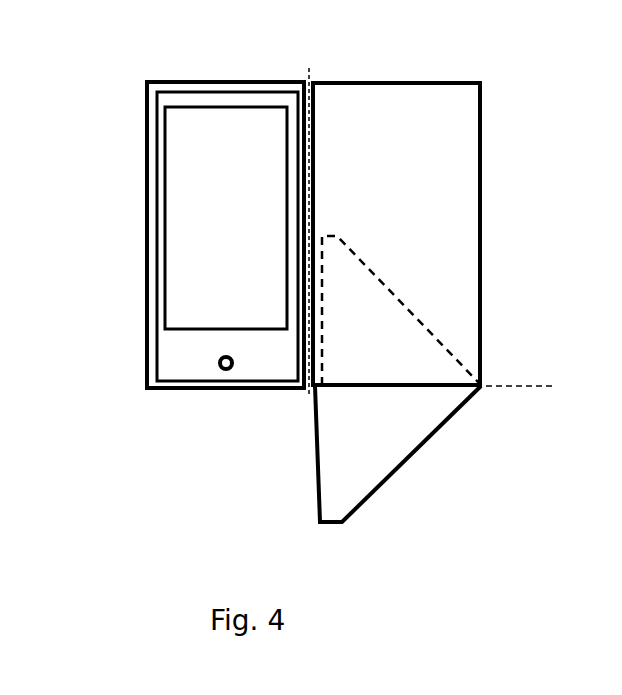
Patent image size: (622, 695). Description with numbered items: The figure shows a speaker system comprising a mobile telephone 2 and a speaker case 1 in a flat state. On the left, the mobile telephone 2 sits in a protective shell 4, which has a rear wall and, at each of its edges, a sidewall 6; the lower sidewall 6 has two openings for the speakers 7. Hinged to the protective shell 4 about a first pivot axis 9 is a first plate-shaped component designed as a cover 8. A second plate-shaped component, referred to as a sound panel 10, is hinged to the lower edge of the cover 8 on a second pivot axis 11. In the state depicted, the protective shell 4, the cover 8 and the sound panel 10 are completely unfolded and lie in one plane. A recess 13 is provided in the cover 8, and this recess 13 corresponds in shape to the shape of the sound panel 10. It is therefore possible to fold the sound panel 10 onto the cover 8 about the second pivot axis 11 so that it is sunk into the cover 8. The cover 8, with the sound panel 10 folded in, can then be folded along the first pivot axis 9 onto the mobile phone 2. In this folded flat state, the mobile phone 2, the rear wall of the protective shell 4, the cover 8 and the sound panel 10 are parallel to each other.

The speaker case 1 is at (518, 129).
The mobile telephone 2 is at (166, 125).
The protective shell 4 is at (113, 242).
The sidewall 6 is at (155, 390).
The speakers 7 is at (185, 392).
The cover 8 is at (440, 213).
The first pivot axis 9 is at (307, 68).
The sound panel 10 is at (403, 420).
The second pivot axis 11 is at (530, 388).
The recess 13 is at (403, 343).